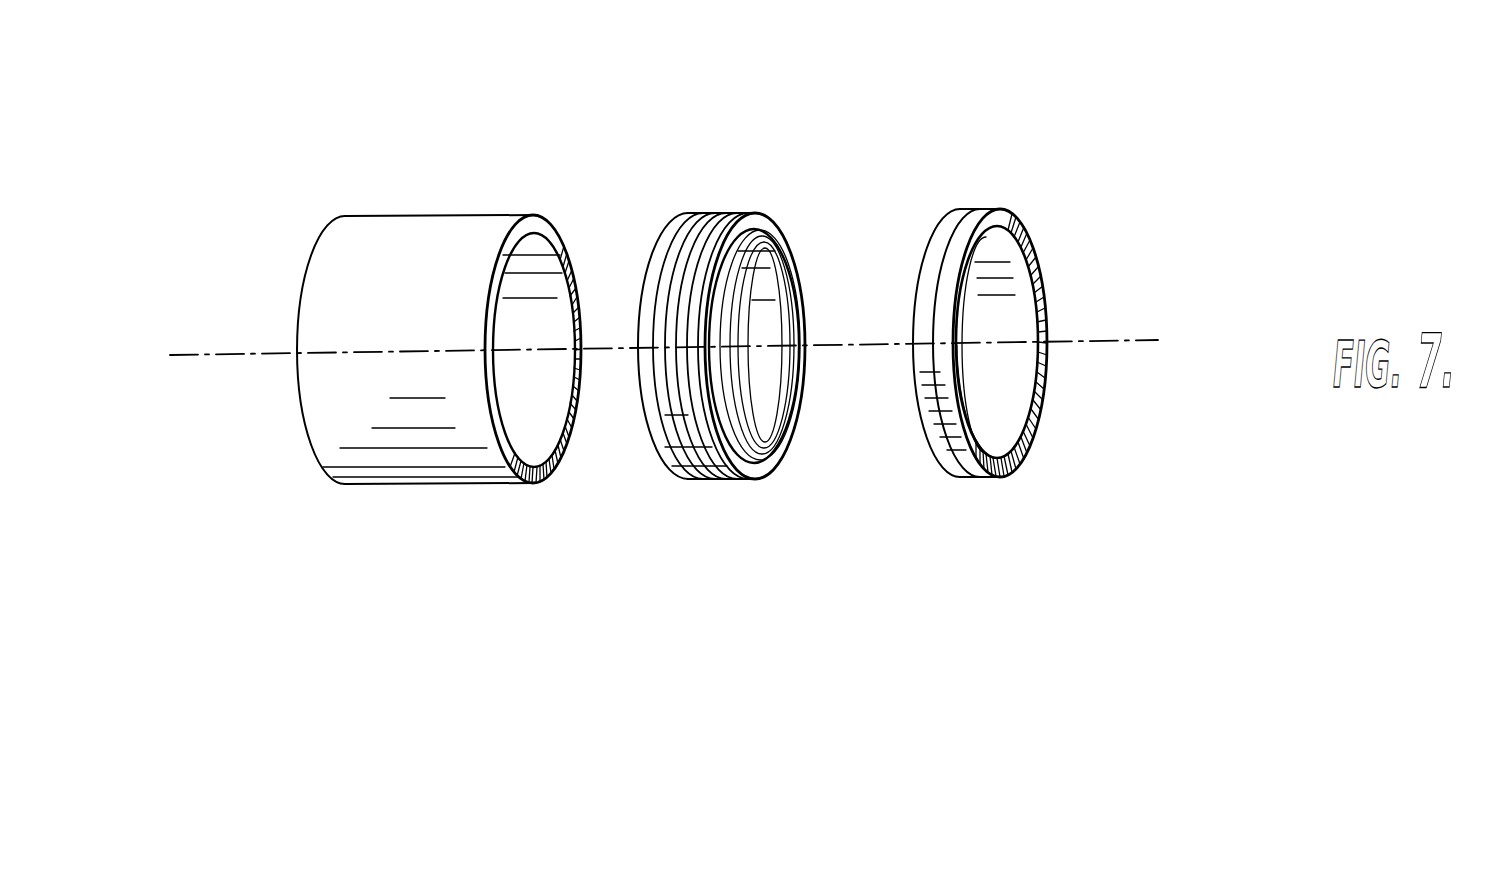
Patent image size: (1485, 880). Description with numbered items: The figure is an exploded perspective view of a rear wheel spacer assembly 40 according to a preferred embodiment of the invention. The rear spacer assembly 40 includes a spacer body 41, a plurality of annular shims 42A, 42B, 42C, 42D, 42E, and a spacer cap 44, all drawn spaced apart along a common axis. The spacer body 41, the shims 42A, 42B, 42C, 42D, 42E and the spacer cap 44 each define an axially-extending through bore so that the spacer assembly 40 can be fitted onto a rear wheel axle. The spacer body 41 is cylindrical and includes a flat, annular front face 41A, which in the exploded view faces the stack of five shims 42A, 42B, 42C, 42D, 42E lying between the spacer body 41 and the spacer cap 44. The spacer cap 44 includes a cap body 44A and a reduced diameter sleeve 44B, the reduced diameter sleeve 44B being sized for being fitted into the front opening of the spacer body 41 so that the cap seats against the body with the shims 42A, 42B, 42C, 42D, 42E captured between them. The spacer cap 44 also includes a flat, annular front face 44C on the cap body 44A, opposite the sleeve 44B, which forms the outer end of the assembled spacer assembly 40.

The rear wheel spacer assembly 40 is at (1057, 122).
The spacer body 41 is at (408, 473).
The front face 41A is at (761, 304).
The annular shim 42A is at (683, 213).
The annular shim 42B is at (705, 213).
The annular shim 42C is at (720, 213).
The annular shim 42D is at (727, 213).
The annular shim 42E is at (758, 213).
The spacer cap 44 is at (1055, 387).
The cap body 44A is at (972, 473).
The reduced diameter sleeve 44B is at (942, 233).
The front face 44C is at (1038, 415).